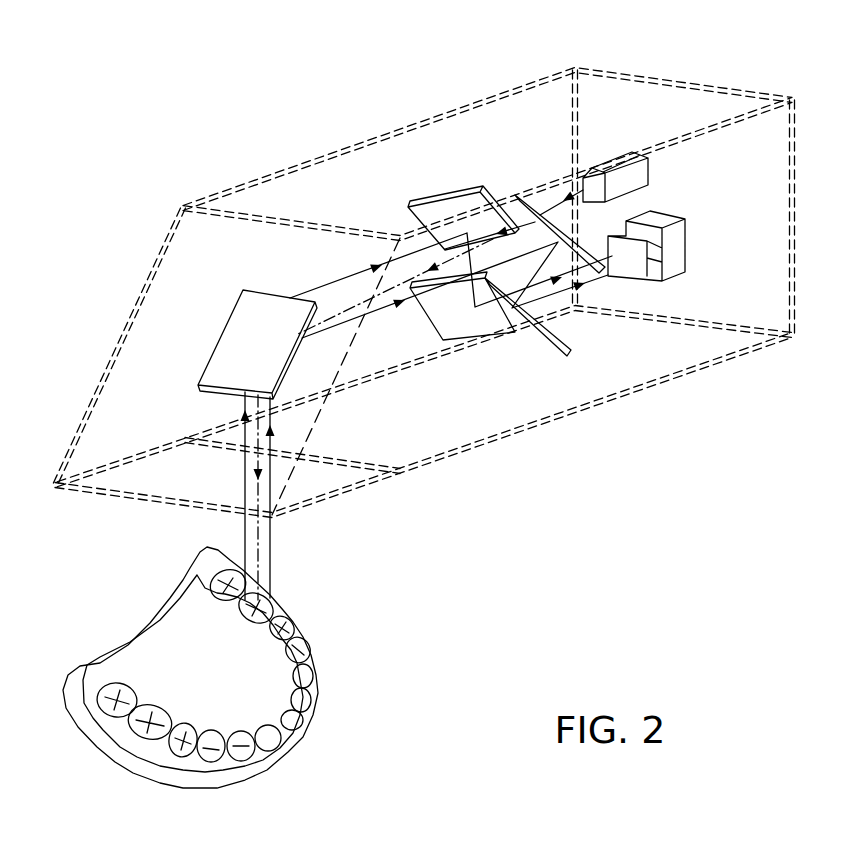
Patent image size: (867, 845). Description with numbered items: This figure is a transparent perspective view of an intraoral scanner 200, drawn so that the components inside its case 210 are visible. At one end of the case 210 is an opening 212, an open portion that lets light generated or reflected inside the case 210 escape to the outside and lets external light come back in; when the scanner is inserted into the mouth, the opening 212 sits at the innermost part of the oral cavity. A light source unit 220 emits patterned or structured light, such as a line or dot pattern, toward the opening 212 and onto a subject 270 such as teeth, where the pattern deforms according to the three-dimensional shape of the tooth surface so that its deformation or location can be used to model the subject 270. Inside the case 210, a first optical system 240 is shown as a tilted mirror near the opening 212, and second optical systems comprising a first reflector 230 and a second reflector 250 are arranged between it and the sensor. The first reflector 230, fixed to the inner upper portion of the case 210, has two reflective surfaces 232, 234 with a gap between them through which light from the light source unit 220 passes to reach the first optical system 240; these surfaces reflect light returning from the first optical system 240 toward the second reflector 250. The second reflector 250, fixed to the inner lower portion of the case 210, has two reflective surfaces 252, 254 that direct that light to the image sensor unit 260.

The intraoral scanner 200 is at (424, 398).
The case 210 is at (137, 305).
The opening 212 is at (333, 497).
The light source unit 220 is at (603, 166).
The first reflector 230 is at (500, 47).
The reflective surface 232 is at (442, 213).
The reflective surface 234 is at (550, 230).
The first optical system 240 is at (262, 290).
The second reflector 250 is at (575, 478).
The reflective surface 252 is at (475, 320).
The reflective surface 254 is at (540, 330).
The image sensor unit 260 is at (658, 283).
The subject 270 is at (304, 620).